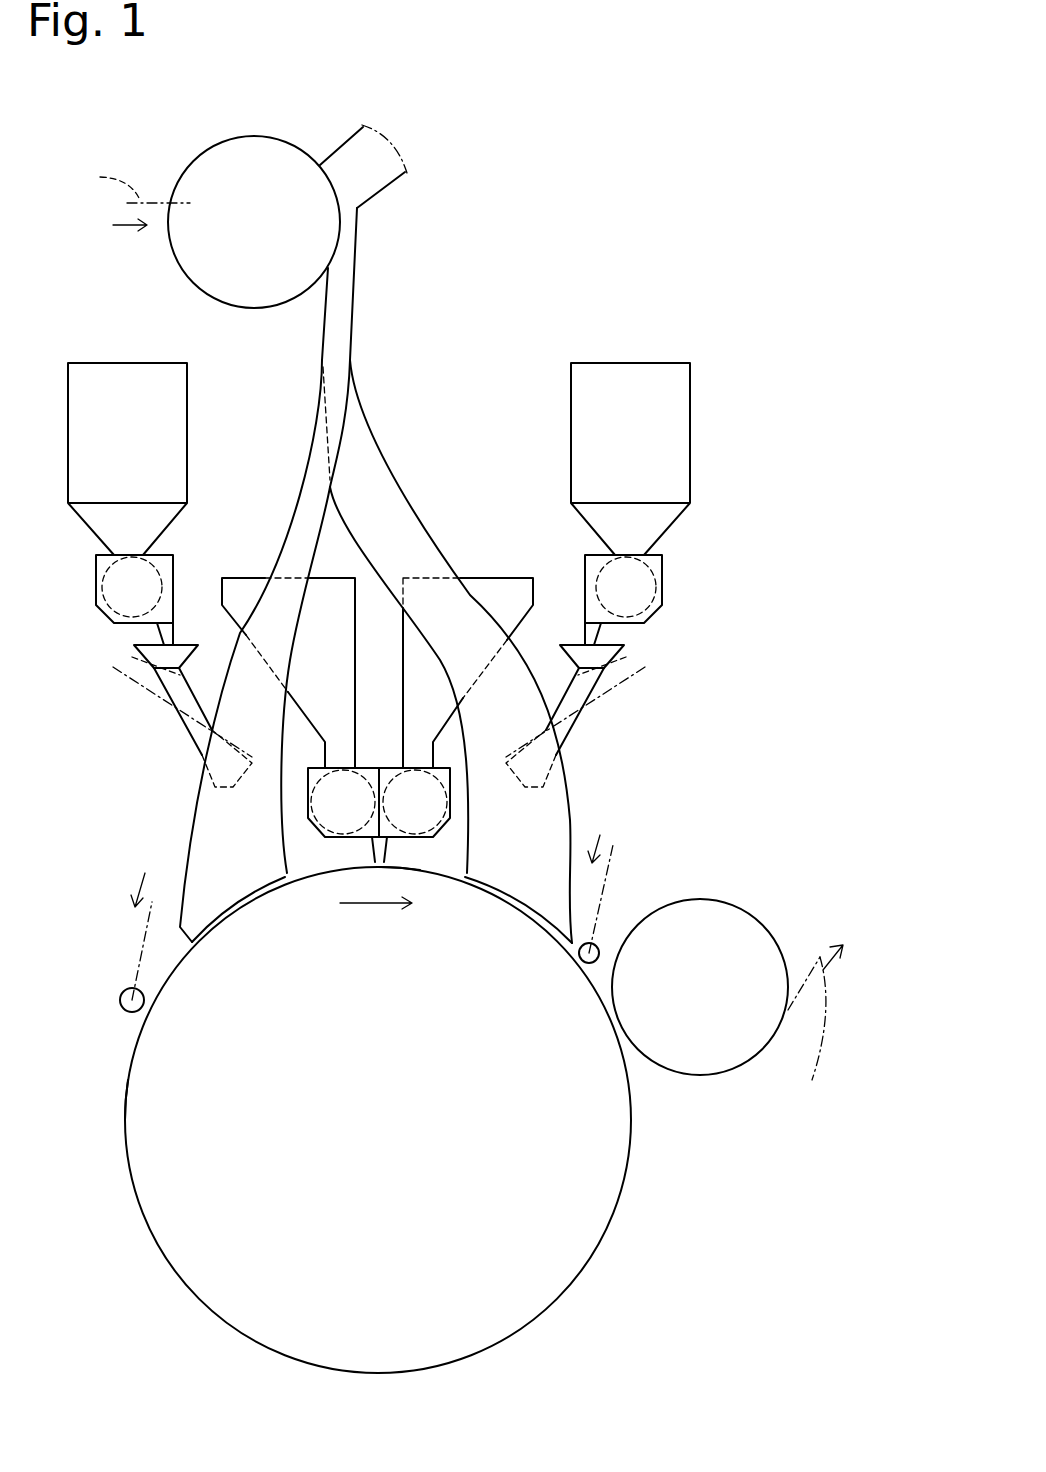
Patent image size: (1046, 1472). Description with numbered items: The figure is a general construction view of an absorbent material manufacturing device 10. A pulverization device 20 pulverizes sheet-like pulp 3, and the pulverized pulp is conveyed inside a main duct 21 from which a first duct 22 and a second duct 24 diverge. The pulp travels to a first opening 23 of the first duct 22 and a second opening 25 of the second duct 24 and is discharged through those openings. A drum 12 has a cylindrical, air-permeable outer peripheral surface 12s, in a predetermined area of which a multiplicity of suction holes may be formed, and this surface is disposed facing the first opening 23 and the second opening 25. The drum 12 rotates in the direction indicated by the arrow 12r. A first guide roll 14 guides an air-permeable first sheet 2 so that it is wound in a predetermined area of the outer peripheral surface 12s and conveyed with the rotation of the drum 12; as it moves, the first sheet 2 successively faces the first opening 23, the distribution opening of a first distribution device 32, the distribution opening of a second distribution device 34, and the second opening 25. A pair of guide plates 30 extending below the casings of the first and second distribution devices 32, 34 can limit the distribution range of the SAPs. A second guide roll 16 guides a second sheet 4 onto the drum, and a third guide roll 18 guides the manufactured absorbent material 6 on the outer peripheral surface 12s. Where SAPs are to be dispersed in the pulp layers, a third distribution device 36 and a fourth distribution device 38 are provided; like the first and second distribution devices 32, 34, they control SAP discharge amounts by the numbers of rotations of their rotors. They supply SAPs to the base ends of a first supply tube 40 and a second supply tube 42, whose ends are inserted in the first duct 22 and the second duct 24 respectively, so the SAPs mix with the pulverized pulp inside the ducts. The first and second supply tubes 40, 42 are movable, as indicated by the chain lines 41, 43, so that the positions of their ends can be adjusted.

The first sheet 2 is at (143, 930).
The sheet-like pulp 3 is at (124, 196).
The second sheet 4 is at (608, 860).
The absorbent material 6 is at (815, 1029).
The absorbent material manufacturing device 10 is at (828, 160).
The drum 12 is at (607, 1149).
The outer peripheral surface 12s is at (437, 875).
The arrow indicating rotation direction 12r is at (376, 934).
The first guide roll 14 is at (120, 1000).
The second guide roll 16 is at (593, 943).
The third guide roll 18 is at (717, 920).
The pulverization device 20 is at (205, 145).
The main duct 21 is at (338, 310).
The first duct 22 is at (308, 460).
The first opening 23 is at (225, 917).
The second duct 24 is at (382, 497).
The second opening 25 is at (538, 923).
The guide plates 30 is at (372, 850).
The first distribution device 32 is at (245, 565).
The second distribution device 34 is at (507, 567).
The third distribution device 36 is at (92, 349).
The fourth distribution device 38 is at (677, 349).
The first supply tube 40 is at (192, 737).
The chain line 41 is at (153, 695).
The second supply tube 42 is at (563, 742).
The chain line 43 is at (603, 697).